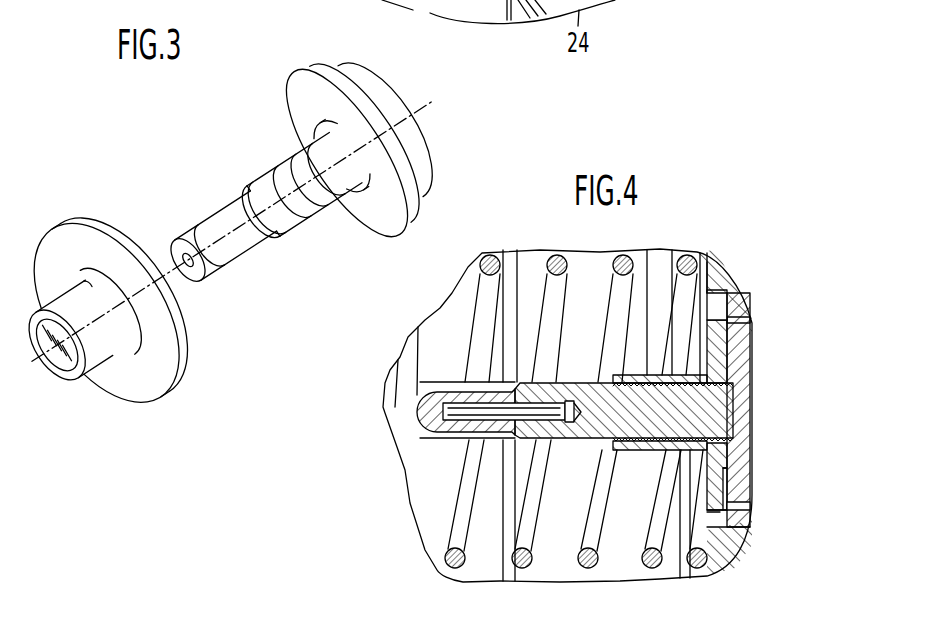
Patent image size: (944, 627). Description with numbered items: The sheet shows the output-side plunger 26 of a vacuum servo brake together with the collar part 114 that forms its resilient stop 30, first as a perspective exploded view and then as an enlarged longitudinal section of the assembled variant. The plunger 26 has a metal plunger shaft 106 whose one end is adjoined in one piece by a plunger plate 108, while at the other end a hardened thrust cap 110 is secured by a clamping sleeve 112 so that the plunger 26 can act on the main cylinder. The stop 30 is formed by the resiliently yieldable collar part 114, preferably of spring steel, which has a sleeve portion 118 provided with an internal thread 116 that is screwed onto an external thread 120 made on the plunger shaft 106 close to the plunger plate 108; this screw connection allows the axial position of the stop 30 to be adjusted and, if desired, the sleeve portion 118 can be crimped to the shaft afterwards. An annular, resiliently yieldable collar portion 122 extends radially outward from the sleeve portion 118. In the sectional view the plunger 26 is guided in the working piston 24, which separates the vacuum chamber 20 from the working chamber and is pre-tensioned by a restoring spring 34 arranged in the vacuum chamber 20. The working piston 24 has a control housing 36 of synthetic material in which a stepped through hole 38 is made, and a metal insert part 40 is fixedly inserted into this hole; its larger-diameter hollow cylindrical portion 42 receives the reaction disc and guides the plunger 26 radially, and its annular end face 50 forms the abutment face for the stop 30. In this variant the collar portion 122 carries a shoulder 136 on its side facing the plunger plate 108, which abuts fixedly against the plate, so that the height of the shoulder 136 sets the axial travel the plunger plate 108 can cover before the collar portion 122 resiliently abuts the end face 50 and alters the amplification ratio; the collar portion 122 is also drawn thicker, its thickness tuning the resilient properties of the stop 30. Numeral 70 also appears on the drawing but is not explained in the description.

In FIG. 4, the vacuum chamber 20 is at (452, 333).
In FIG. 4, the working piston 24 is at (734, 563).
In FIG. 4, the plunger 26 is at (571, 450).
In FIG. 4, the stop 30 is at (722, 517).
In FIG. 4, the restoring spring 34 is at (443, 560).
In FIG. 4, the control housing 36 is at (713, 270).
In FIG. 4, the stepped through hole 38 is at (731, 505).
In FIG. 4, the insert part 40 is at (760, 320).
In FIG. 4, the hollow cylindrical portion 42 is at (737, 318).
In FIG. 4, the annular end face 50 is at (722, 305).
In FIG. 4, the housing body 70 is at (404, 508).
In FIG. 3, the plunger shaft 106 is at (226, 221).
In FIG. 4, the plunger shaft 106 is at (591, 398).
In FIG. 3, the plunger plate 108 is at (306, 92).
In FIG. 4, the plunger plate 108 is at (741, 478).
In FIG. 4, the thrust cap 110 is at (422, 413).
In FIG. 4, the clamping sleeve 112 is at (457, 420).
In FIG. 3, the collar part 114 is at (93, 216).
In FIG. 4, the collar part 114 is at (632, 462).
In FIG. 3, the internal thread 116 is at (69, 366).
In FIG. 4, the internal thread 116 is at (718, 409).
In FIG. 3, the sleeve portion 118 is at (112, 358).
In FIG. 4, the sleeve portion 118 is at (688, 566).
In FIG. 3, the external thread 120 is at (302, 218).
In FIG. 4, the external thread 120 is at (724, 375).
In FIG. 3, the collar portion 122 is at (158, 368).
In FIG. 4, the collar portion 122 is at (717, 347).
In FIG. 4, the shoulder 136 is at (725, 453).